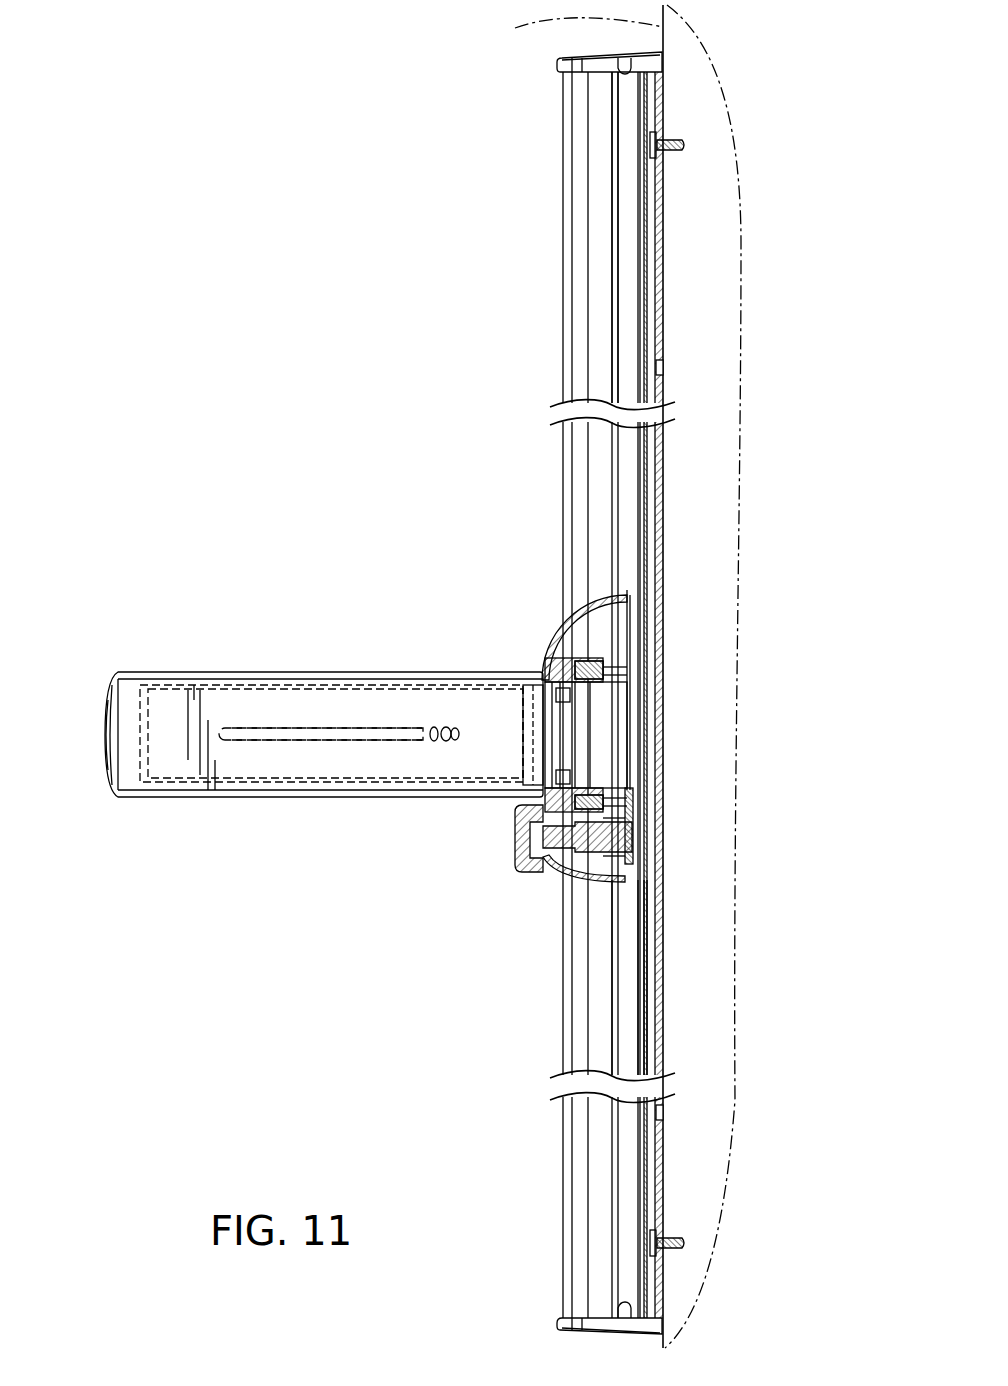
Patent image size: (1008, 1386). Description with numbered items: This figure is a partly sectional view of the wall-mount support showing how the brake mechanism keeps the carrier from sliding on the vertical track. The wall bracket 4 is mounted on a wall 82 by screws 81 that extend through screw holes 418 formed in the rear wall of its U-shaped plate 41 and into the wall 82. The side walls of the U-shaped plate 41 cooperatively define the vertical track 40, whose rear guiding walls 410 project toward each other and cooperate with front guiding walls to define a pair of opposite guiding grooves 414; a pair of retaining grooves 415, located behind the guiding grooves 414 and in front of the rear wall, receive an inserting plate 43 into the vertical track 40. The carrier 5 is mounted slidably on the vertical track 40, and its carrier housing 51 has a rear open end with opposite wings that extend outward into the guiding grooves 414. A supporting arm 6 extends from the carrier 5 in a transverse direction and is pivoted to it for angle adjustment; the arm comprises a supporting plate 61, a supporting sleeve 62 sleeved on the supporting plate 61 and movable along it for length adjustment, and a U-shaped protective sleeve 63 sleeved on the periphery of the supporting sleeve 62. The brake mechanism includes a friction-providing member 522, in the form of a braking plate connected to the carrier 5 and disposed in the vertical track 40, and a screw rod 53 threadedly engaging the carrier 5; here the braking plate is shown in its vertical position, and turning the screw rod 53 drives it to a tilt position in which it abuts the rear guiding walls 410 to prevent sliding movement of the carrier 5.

The wall bracket 4 is at (589, 676).
The vertical track 40 is at (573, 279).
The U-shaped plate 41 is at (556, 444).
The rear guiding walls 410 is at (637, 1006).
The guiding grooves 414 is at (624, 930).
The retaining grooves 415 is at (648, 968).
The screw holes 418 is at (663, 152).
The inserting plate 43 is at (645, 952).
The carrier 5 is at (503, 742).
The carrier housing 51 is at (553, 640).
The friction-providing member 522 is at (622, 855).
The screw rod 53 is at (505, 835).
The supporting arm 6 is at (324, 714).
The supporting plate 61 is at (543, 712).
The supporting sleeve 62 is at (265, 780).
The protective sleeve 63 is at (186, 792).
The screws 81 is at (680, 143).
The wall 82 is at (613, 676).